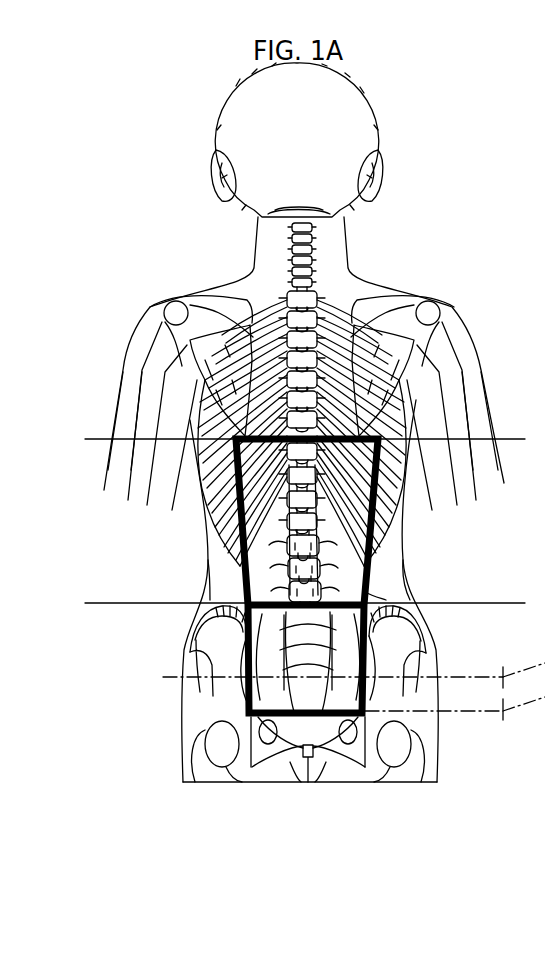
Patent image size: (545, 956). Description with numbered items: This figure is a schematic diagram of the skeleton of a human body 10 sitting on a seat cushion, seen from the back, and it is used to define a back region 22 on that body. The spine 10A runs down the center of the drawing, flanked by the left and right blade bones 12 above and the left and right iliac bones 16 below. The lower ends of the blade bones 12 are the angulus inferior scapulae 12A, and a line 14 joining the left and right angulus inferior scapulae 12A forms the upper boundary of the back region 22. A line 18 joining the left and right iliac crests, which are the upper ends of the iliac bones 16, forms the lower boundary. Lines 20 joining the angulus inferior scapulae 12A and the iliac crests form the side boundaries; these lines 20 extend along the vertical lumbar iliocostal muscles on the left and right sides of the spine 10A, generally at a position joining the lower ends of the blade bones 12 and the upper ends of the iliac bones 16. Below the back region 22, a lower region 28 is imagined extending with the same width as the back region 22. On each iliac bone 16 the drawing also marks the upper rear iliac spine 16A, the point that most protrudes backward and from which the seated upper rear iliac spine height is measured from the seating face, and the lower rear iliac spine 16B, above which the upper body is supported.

The human body 10 is at (399, 262).
The spine 10A is at (326, 364).
The blade bones 12 is at (180, 312).
The angulus inferior scapulae 12A is at (232, 438).
The line joining angulus inferior scapulae 14 is at (358, 412).
The iliac bones 16 is at (208, 651).
The upper rear iliac spine 16A is at (245, 690).
The lower rear iliac spine 16B is at (369, 717).
The line joining the left and right iliac crests 18 is at (365, 592).
The lines joining the angulus inferior scapulae and the iliac crests 20 is at (208, 580).
The back region 22 is at (345, 563).
The lower region 28 is at (405, 665).